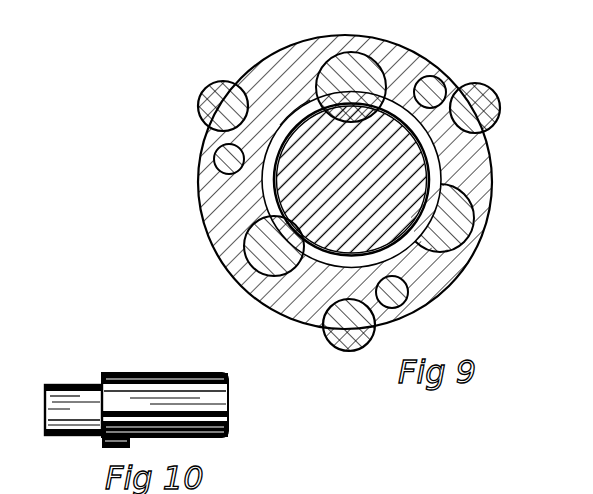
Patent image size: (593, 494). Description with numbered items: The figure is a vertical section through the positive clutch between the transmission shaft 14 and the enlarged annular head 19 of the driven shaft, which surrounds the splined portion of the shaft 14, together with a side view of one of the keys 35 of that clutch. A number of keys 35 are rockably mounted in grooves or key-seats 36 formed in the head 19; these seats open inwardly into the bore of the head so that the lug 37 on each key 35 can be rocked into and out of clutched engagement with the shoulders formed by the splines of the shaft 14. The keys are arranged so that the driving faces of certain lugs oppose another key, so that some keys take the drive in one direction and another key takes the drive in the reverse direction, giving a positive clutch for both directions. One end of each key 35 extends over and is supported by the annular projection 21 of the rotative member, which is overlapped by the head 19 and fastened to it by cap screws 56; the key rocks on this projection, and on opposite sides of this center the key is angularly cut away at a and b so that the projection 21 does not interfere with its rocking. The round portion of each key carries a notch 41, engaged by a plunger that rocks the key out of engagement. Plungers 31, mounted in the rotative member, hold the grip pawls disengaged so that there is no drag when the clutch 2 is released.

In FIG. 9, the transmission shaft 14 is at (352, 179).
In FIG. 9, the enlarged annular head 19 is at (487, 166).
In FIG. 9, the annular projection 21 is at (433, 181).
In FIG. 9, the plunger 31 is at (212, 100).
In FIG. 9, the key 35 is at (352, 62).
In FIG. 10, the key 35 is at (192, 373).
In FIG. 9, the key-seat 36 is at (398, 68).
In FIG. 9, the lug 37 is at (300, 208).
In FIG. 10, the lug 37 is at (203, 447).
In FIG. 10, the notch 41 is at (122, 372).
In FIG. 9, the cap screw 56 is at (446, 85).
In FIG. 9, the clutch 2 is at (283, 282).
In FIG. 9, the angularly cut away portion a is at (356, 64).
In FIG. 9, the angularly cut away portion b is at (330, 112).